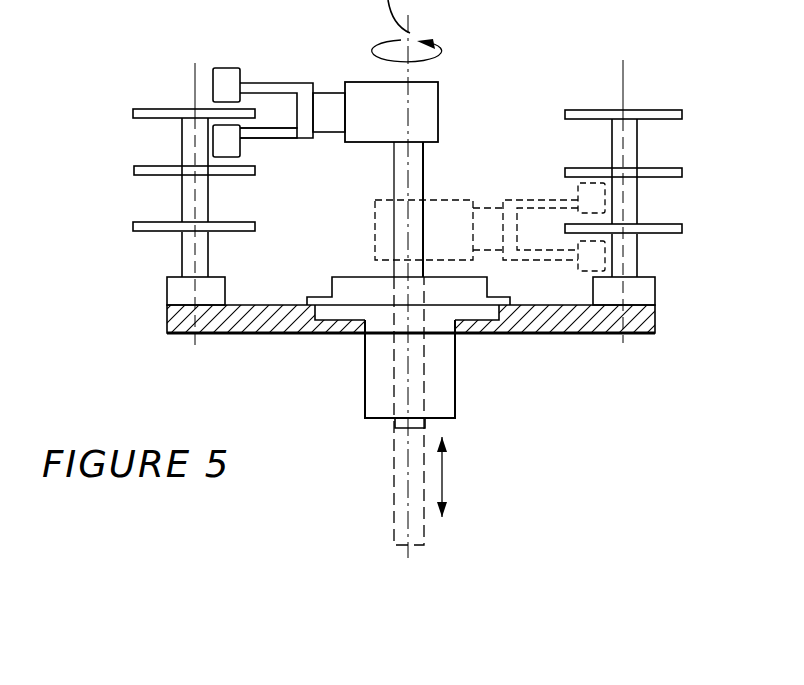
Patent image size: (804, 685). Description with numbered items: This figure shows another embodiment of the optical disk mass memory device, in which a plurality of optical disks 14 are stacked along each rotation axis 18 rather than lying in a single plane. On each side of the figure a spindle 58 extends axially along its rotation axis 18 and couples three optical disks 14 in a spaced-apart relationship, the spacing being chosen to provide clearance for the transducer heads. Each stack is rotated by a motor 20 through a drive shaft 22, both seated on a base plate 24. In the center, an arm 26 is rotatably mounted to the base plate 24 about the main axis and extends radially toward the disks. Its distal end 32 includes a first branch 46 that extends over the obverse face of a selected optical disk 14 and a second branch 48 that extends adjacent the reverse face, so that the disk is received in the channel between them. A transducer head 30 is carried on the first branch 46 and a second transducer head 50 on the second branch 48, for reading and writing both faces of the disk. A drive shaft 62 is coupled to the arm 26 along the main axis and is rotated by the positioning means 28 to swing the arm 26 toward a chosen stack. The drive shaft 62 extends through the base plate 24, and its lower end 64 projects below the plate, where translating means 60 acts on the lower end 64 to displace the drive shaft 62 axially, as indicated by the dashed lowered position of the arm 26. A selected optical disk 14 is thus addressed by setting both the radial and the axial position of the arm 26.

The optical disk 14 is at (152, 108).
The rotation axis 18 is at (193, 83).
The motor 20 is at (167, 290).
The drive shaft 22 is at (182, 250).
The base plate 24 is at (540, 334).
The arm 26 is at (430, 103).
The positioning means 28 is at (488, 285).
The transducer head 30 is at (228, 68).
The distal end 32 is at (316, 108).
The first branch 46 is at (278, 82).
The second branch 48 is at (288, 137).
The second transducer head 50 is at (240, 145).
The spindle 58 is at (208, 200).
The translating means 60 is at (455, 378).
The drive shaft 62 is at (423, 172).
The lower end 64 is at (395, 424).